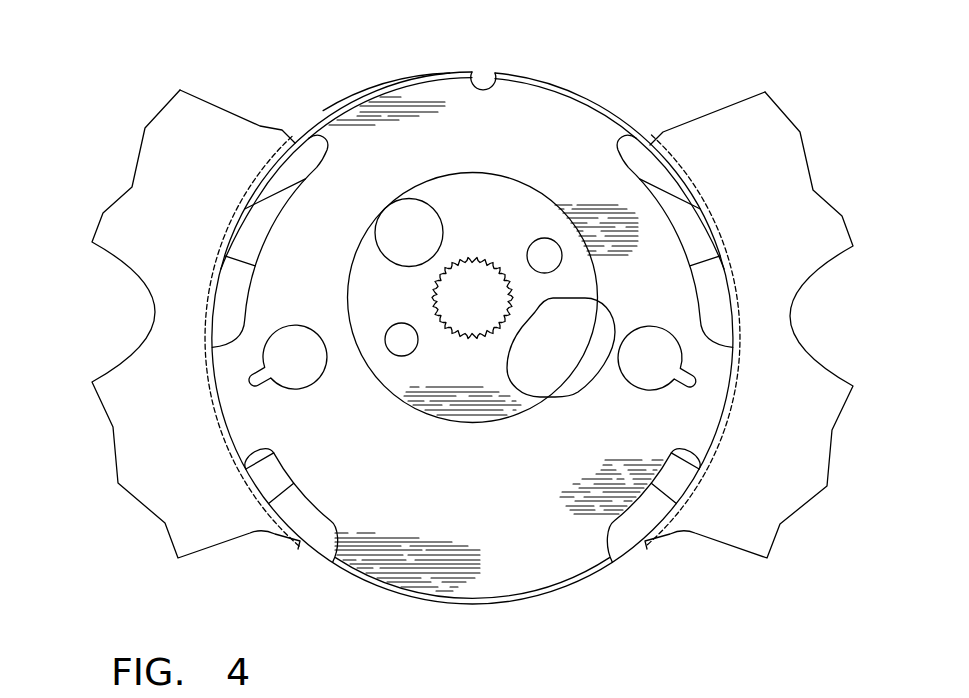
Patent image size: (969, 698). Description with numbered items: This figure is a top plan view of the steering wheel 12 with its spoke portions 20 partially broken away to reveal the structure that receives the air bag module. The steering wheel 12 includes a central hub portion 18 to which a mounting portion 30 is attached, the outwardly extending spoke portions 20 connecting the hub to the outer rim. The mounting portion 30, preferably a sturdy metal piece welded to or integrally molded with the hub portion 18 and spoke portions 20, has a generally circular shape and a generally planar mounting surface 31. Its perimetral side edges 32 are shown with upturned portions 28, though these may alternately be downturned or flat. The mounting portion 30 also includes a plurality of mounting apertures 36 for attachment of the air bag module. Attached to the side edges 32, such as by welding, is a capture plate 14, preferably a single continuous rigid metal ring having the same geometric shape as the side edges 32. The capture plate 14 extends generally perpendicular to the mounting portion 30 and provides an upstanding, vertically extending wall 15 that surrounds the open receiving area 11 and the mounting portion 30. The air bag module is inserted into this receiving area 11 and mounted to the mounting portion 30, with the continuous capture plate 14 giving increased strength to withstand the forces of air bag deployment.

The receiving area 11 is at (472, 315).
The steering wheel 12 is at (698, 82).
The capture plate 14 is at (332, 113).
The vertically extending wall 15 is at (495, 87).
The central hub portion 18 is at (543, 210).
The spoke portions 20 is at (135, 235).
The upturned portions 28 is at (441, 90).
The mounting portion 30 is at (403, 515).
The mounting surface 31 is at (470, 533).
The perimetral side edges 32 is at (602, 552).
The mounting apertures 36 is at (313, 333).